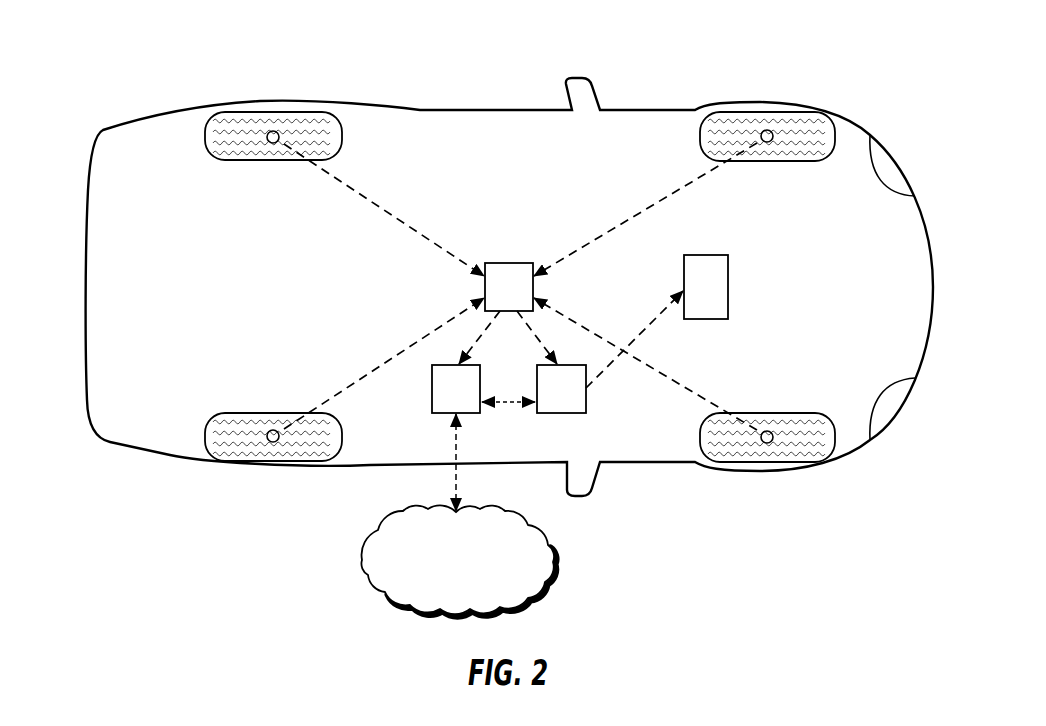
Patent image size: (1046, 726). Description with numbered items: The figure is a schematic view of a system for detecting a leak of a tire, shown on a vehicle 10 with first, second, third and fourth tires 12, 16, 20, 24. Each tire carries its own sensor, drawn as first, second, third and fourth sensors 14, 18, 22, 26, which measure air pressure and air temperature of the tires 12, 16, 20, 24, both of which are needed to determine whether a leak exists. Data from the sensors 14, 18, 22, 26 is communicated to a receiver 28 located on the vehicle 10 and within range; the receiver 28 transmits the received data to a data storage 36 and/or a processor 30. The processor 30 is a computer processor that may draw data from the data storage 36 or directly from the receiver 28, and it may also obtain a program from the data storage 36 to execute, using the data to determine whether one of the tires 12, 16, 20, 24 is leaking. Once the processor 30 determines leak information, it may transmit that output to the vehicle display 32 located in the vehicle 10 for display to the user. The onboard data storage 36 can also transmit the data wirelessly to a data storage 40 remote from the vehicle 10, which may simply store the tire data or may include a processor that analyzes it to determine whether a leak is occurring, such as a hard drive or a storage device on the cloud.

The vehicle 10 is at (194, 302).
The first tire 12 is at (808, 115).
The first sensor 14 is at (765, 130).
The second tire 16 is at (808, 457).
The second sensor 18 is at (765, 443).
The third tire 20 is at (233, 114).
The third sensor 22 is at (276, 131).
The fourth tire 24 is at (237, 458).
The fourth sensor 26 is at (276, 442).
The receiver 28 is at (496, 300).
The processor 30 is at (548, 402).
The vehicle display 32 is at (693, 300).
The data storage 36 is at (443, 402).
The remote data storage 40 is at (444, 568).